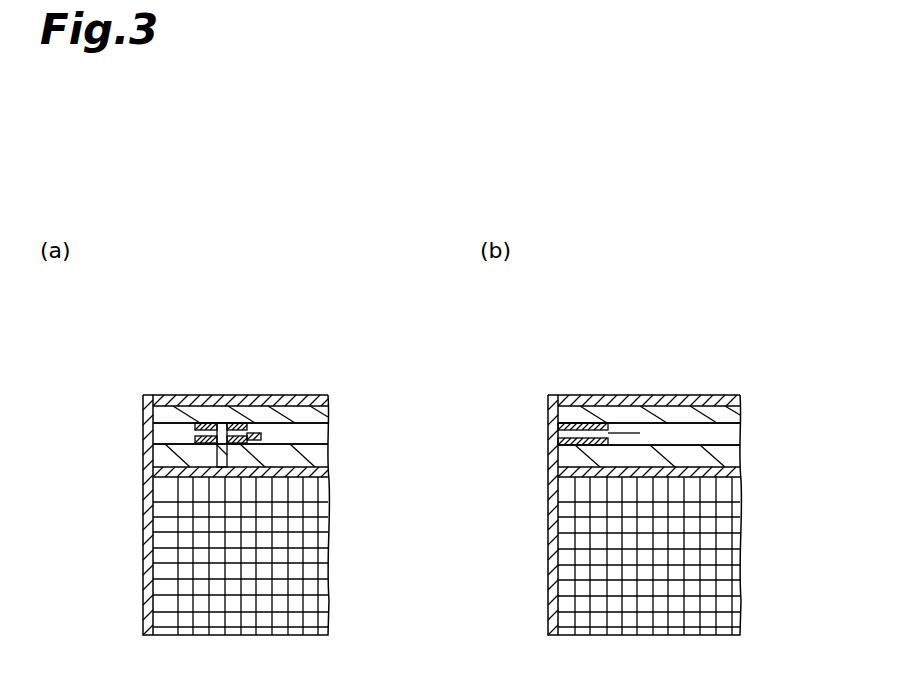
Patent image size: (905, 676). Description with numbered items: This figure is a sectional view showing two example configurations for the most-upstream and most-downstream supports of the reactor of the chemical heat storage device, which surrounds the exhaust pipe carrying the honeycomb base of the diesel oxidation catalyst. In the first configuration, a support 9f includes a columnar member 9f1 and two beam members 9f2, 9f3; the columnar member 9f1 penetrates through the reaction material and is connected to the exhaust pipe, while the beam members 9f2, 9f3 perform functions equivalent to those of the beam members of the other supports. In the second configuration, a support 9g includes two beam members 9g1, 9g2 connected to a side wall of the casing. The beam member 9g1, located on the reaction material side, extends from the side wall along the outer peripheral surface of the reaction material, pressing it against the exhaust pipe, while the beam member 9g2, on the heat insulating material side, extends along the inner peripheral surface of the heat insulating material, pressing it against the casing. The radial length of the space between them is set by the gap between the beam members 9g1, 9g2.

The support 9f is at (262, 437).
The columnar member 9f1 is at (228, 446).
The beam member 9f2 is at (268, 441).
The beam member 9f3 is at (272, 397).
The support 9g is at (616, 432).
The beam member 9g1 is at (697, 480).
The beam member 9g2 is at (625, 423).